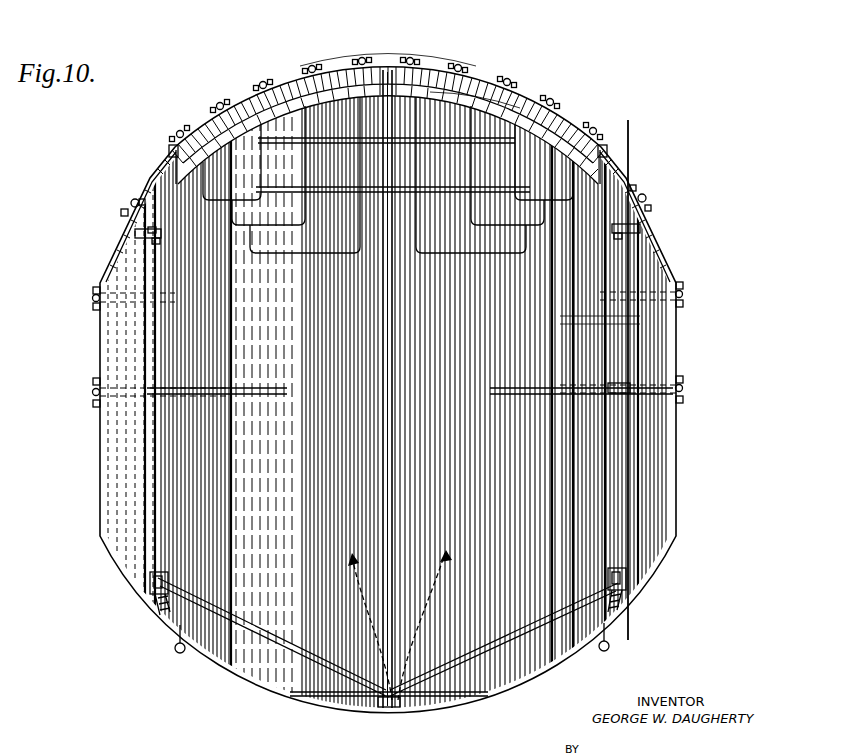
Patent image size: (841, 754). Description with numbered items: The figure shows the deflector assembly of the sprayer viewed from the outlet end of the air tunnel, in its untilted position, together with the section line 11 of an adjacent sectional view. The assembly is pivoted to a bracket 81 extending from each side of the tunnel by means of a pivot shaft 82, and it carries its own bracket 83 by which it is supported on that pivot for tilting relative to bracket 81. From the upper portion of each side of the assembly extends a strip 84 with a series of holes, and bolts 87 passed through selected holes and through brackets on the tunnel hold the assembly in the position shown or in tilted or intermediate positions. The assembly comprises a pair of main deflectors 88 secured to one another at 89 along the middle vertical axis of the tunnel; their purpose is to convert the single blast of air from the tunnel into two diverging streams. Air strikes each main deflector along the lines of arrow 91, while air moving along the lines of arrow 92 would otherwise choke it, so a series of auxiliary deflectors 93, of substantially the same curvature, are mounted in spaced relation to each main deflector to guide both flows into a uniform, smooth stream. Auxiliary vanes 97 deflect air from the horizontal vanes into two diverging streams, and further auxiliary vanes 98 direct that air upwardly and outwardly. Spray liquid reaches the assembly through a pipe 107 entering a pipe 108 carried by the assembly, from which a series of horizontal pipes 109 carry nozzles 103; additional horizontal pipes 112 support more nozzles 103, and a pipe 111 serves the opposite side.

The section line 11 is at (160, 45).
The bracket 81 is at (158, 606).
The pivot shaft 82 is at (152, 590).
The bracket 83 is at (150, 575).
The strip 84 is at (140, 236).
The bolts 87 is at (134, 232).
The main deflectors 88 is at (301, 481).
The connection of main deflectors 89 is at (383, 410).
The arrow 91 is at (405, 702).
The arrow 92 is at (614, 426).
The auxiliary deflectors 93 is at (610, 355).
The auxiliary vanes 97 is at (465, 110).
The auxiliary vanes 98 is at (333, 66).
The nozzles 103 is at (594, 126).
The pipe 107 is at (180, 654).
The pipe 108 is at (171, 148).
The horizontal pipes 109 is at (221, 103).
The pipe 111 is at (604, 151).
The horizontal pipes 112 is at (180, 128).